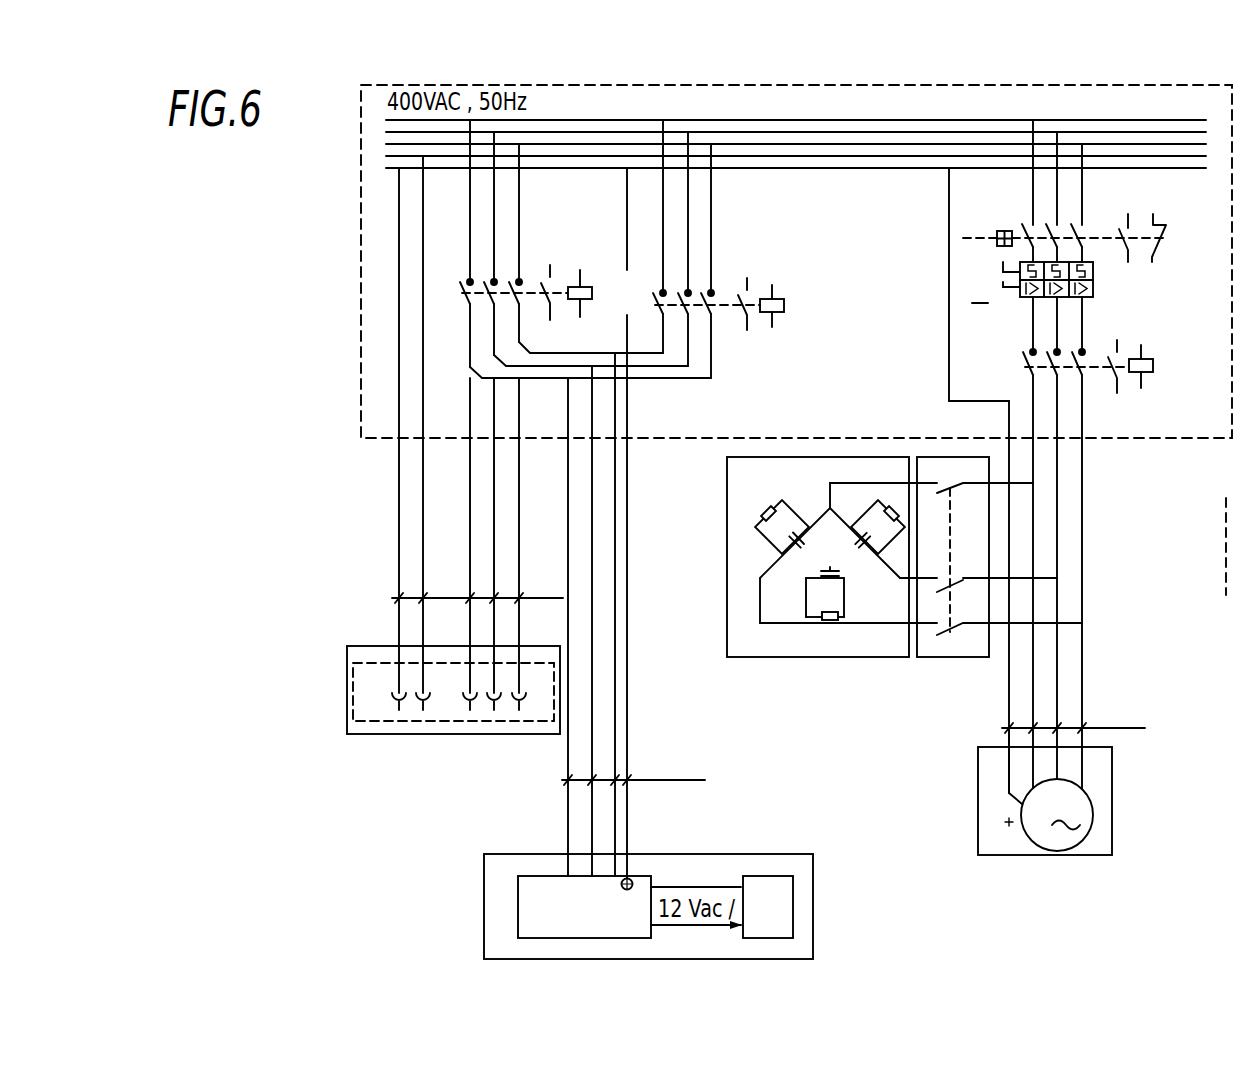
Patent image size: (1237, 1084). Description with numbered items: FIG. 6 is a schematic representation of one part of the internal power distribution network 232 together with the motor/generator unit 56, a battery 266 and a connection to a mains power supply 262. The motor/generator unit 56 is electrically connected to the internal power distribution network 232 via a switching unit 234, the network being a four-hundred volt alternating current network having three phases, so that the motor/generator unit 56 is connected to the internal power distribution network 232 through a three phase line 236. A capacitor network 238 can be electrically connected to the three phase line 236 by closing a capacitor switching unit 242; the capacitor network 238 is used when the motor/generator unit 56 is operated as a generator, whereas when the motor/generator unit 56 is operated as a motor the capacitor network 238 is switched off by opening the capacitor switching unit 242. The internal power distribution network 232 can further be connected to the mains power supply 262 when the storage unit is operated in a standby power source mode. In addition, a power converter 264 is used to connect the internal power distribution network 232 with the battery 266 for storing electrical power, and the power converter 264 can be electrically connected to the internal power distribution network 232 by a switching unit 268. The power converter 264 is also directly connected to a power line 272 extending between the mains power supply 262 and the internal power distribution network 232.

The internal power distribution network 232 is at (807, 140).
The switching unit 268 is at (655, 281).
The power line 272 is at (482, 500).
The mains power supply 262 is at (462, 727).
The power converter 264 is at (518, 903).
The battery 266 is at (793, 905).
The switching unit 234 is at (985, 309).
The three phase line 236 is at (1066, 523).
The capacitor network 238 is at (812, 657).
The capacitor switching unit 242 is at (950, 658).
The motor/generator unit 56 is at (1055, 838).